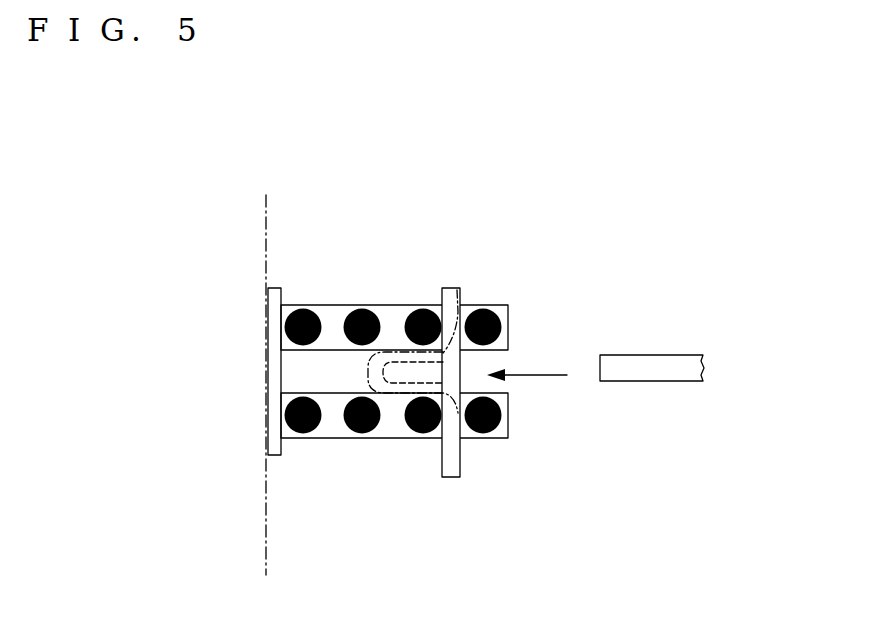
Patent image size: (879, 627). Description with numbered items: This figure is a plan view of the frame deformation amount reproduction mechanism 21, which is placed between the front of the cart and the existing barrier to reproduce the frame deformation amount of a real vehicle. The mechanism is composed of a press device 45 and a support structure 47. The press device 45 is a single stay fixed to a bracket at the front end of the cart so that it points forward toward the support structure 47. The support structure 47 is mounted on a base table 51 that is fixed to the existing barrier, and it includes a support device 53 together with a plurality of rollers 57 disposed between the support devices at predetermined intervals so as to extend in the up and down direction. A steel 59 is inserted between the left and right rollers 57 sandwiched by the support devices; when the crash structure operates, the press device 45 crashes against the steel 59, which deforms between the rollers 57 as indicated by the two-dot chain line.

The frame deformation amount reproduction mechanism 21 is at (398, 228).
The press device 45 is at (685, 363).
The support structure 47 is at (332, 450).
The base table 51 is at (268, 213).
The support device 53 is at (508, 312).
The rollers 57 is at (364, 308).
The steel 59 is at (390, 352).